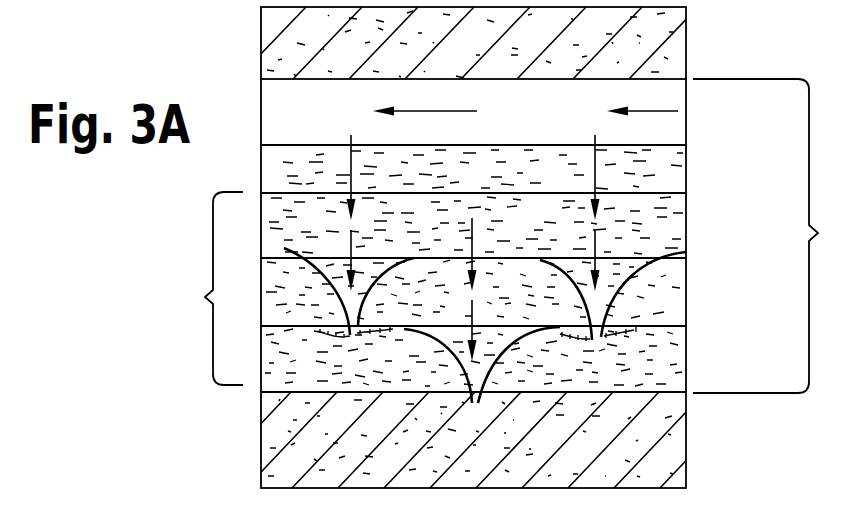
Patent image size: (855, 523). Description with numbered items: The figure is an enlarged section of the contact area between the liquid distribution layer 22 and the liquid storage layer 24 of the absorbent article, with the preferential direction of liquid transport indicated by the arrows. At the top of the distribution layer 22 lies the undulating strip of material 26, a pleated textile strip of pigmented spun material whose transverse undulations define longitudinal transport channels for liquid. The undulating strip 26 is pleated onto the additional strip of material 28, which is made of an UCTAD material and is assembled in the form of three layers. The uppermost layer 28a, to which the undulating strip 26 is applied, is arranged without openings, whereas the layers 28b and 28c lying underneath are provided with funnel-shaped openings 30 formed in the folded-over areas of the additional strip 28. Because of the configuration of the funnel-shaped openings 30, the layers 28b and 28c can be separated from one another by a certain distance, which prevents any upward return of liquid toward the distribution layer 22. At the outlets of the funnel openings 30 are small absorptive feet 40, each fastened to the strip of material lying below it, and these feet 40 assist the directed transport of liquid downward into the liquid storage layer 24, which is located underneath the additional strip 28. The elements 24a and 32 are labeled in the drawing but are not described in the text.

The liquid distribution layer 22 is at (552, 236).
The liquid storage layer 24 is at (670, 440).
The substrate surface 24a is at (768, 5).
The undulating strip of material 26 is at (670, 182).
The additional strip of material 28 is at (467, 292).
The uppermost layer 28a is at (670, 258).
The layer 28b is at (670, 300).
The layer 28c is at (670, 364).
The funnel-shaped openings 30 is at (290, 250).
The cover member 32 is at (268, 41).
The small absorptive feet 40 is at (350, 335).